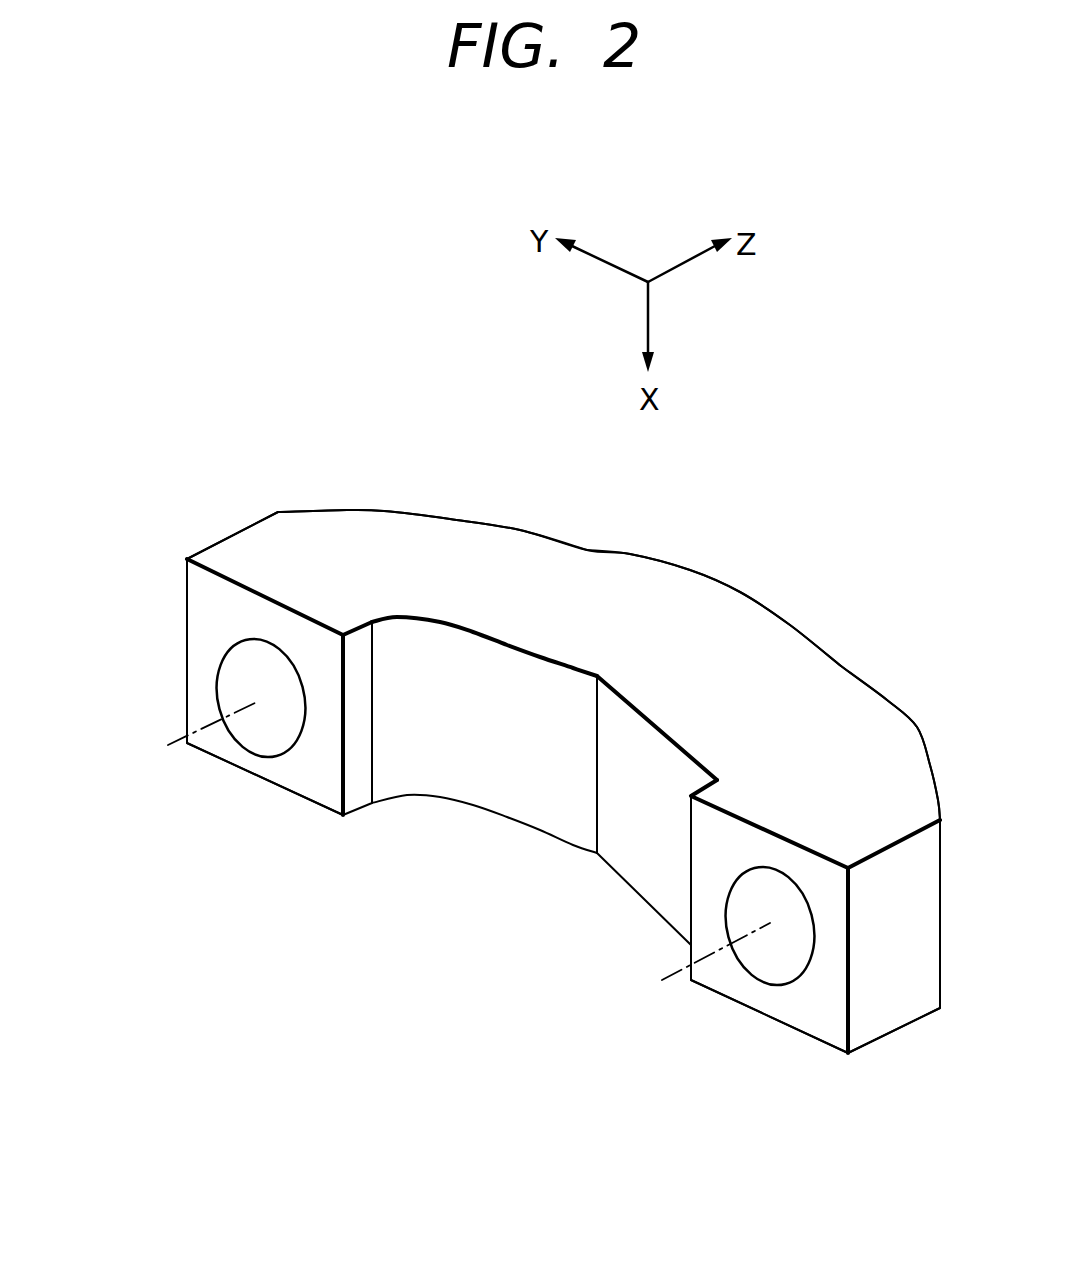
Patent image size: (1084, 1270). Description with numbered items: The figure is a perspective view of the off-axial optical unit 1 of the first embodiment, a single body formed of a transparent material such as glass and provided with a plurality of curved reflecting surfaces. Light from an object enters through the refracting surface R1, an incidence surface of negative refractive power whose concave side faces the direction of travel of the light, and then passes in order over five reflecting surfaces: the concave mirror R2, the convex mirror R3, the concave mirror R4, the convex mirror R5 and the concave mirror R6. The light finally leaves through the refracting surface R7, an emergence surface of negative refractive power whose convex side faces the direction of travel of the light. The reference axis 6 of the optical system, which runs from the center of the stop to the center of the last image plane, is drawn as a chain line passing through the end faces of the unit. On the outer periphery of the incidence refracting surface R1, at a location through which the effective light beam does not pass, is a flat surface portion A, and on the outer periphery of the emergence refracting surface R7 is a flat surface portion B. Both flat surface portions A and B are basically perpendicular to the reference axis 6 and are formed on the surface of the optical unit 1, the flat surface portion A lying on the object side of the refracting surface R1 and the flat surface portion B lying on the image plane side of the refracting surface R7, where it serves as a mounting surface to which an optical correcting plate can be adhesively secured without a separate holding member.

The off-axial optical unit 1 is at (507, 562).
The flat surface portion A is at (203, 612).
The flat surface portion B is at (727, 978).
The reference axis 6 is at (178, 740).
The refracting surface (incidence surface) R1 is at (260, 737).
The concave mirror R2 is at (380, 512).
The convex mirror R3 is at (485, 785).
The concave mirror R4 is at (768, 607).
The convex mirror R5 is at (630, 853).
The concave mirror R6 is at (913, 731).
The refracting surface (emergence surface) R7 is at (778, 970).